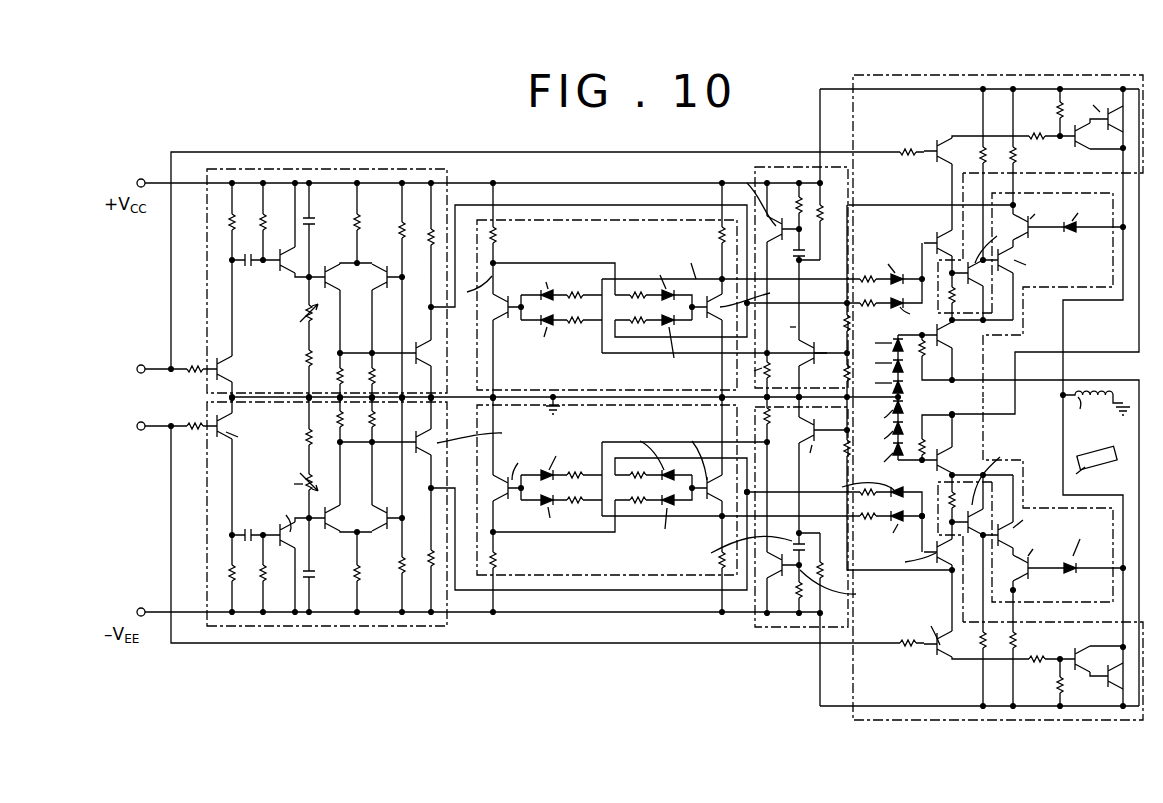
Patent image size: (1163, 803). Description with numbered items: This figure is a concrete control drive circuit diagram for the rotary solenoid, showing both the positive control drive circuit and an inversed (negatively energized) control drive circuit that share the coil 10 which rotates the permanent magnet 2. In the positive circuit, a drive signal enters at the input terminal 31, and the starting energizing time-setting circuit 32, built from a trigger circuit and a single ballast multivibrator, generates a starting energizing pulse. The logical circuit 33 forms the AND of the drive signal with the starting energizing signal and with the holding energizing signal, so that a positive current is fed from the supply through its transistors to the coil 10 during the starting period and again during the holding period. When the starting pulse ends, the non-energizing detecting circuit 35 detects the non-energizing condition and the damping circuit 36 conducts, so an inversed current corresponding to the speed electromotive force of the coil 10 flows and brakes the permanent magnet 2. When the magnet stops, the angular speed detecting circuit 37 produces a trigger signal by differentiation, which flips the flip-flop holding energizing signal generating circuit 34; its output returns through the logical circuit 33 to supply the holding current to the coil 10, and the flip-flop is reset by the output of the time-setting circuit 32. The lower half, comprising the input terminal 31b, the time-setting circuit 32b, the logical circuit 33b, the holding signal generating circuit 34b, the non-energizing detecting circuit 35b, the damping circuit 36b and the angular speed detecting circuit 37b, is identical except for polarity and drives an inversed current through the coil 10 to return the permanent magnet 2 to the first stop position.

The permanent magnet 2 is at (1112, 461).
The coil 10 is at (1095, 417).
The rotary solenoid drive signal input terminal 31 is at (151, 366).
The input terminal 31b is at (141, 434).
The starting energizing time-setting circuit 32 is at (357, 168).
The starting energizing time-setting circuit 32b is at (340, 630).
The logical circuit 33 is at (1012, 75).
The logical circuit 33b is at (855, 655).
The holding energizing signal generating circuit 34 is at (572, 218).
The holding energizing signal generating circuit 34b is at (544, 575).
The non-energizing detecting circuit 35 is at (978, 222).
The non-energizing detecting circuit 35b is at (975, 572).
The damping circuit 36 is at (1062, 292).
The damping circuit 36b is at (1030, 480).
The angular speed detecting circuit 37 is at (767, 166).
The angular speed detecting circuit 37b is at (785, 640).